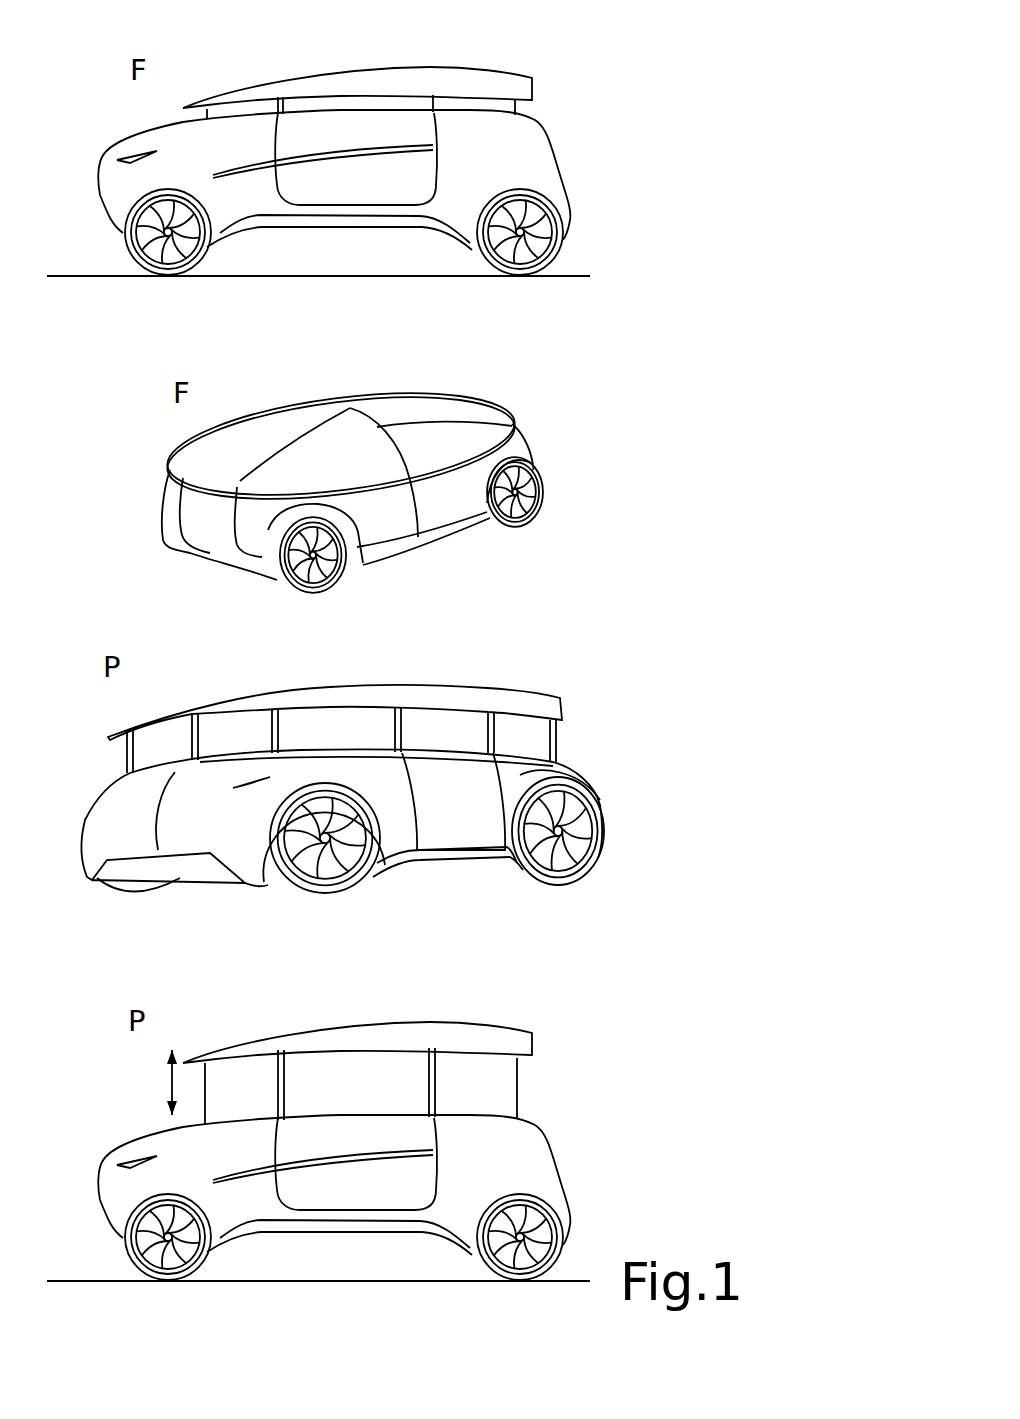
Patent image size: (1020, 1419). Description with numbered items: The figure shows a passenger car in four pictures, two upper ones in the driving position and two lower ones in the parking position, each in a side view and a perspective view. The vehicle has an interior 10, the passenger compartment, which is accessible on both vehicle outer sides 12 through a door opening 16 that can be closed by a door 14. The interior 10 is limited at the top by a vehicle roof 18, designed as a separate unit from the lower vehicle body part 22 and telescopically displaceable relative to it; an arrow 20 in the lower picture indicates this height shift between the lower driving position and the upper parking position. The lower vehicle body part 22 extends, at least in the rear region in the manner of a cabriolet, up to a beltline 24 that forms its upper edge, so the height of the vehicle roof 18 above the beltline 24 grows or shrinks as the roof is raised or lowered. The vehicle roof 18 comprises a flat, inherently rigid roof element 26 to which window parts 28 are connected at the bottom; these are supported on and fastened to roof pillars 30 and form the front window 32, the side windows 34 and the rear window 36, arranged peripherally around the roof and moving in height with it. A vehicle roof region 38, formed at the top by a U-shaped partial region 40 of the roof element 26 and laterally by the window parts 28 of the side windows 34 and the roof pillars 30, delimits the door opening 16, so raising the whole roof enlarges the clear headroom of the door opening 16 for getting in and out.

The interior 10 is at (495, 62).
The vehicle outer side 12 is at (632, 785).
The door 14 is at (362, 185).
The door opening 16 is at (445, 147).
The vehicle roof 18 is at (535, 80).
The arrow 20 is at (165, 1083).
The lower vehicle body part 22 is at (558, 475).
The beltline 24 is at (510, 422).
The roof element 26 is at (308, 433).
The window parts 28 is at (558, 738).
The roof pillars 30 is at (403, 730).
The front window 32 is at (151, 748).
The side windows 34 is at (294, 731).
The rear window 36 is at (526, 1066).
The vehicle roof region 38 is at (398, 1045).
The partial region of the roof element 40 is at (259, 1046).